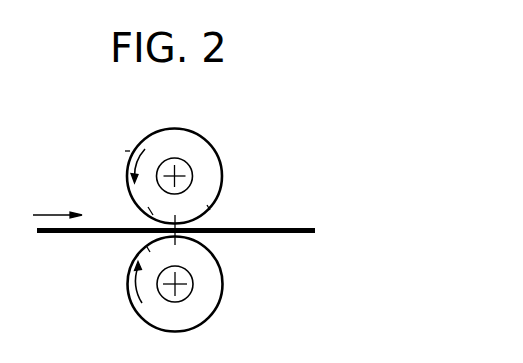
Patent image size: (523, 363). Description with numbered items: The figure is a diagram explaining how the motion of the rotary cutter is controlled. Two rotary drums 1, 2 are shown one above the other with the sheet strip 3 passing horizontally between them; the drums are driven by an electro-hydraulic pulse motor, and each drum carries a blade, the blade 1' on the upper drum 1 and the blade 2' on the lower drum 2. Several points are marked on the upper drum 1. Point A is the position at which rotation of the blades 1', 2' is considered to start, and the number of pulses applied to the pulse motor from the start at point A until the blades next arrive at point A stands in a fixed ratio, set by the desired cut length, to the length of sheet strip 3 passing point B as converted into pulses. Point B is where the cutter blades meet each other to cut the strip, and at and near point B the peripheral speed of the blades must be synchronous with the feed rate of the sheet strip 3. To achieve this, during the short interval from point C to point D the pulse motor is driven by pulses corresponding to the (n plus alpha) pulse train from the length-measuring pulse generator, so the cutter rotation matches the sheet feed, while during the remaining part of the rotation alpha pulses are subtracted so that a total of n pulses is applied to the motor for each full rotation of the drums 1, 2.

The rotary drum 1 is at (189, 176).
The blade 1' is at (139, 141).
The rotary drum 2 is at (189, 284).
The blade 2' is at (130, 305).
The sheet strip 3 is at (98, 233).
The point A is at (118, 149).
The point B is at (184, 218).
The point C is at (148, 199).
The point D is at (207, 195).